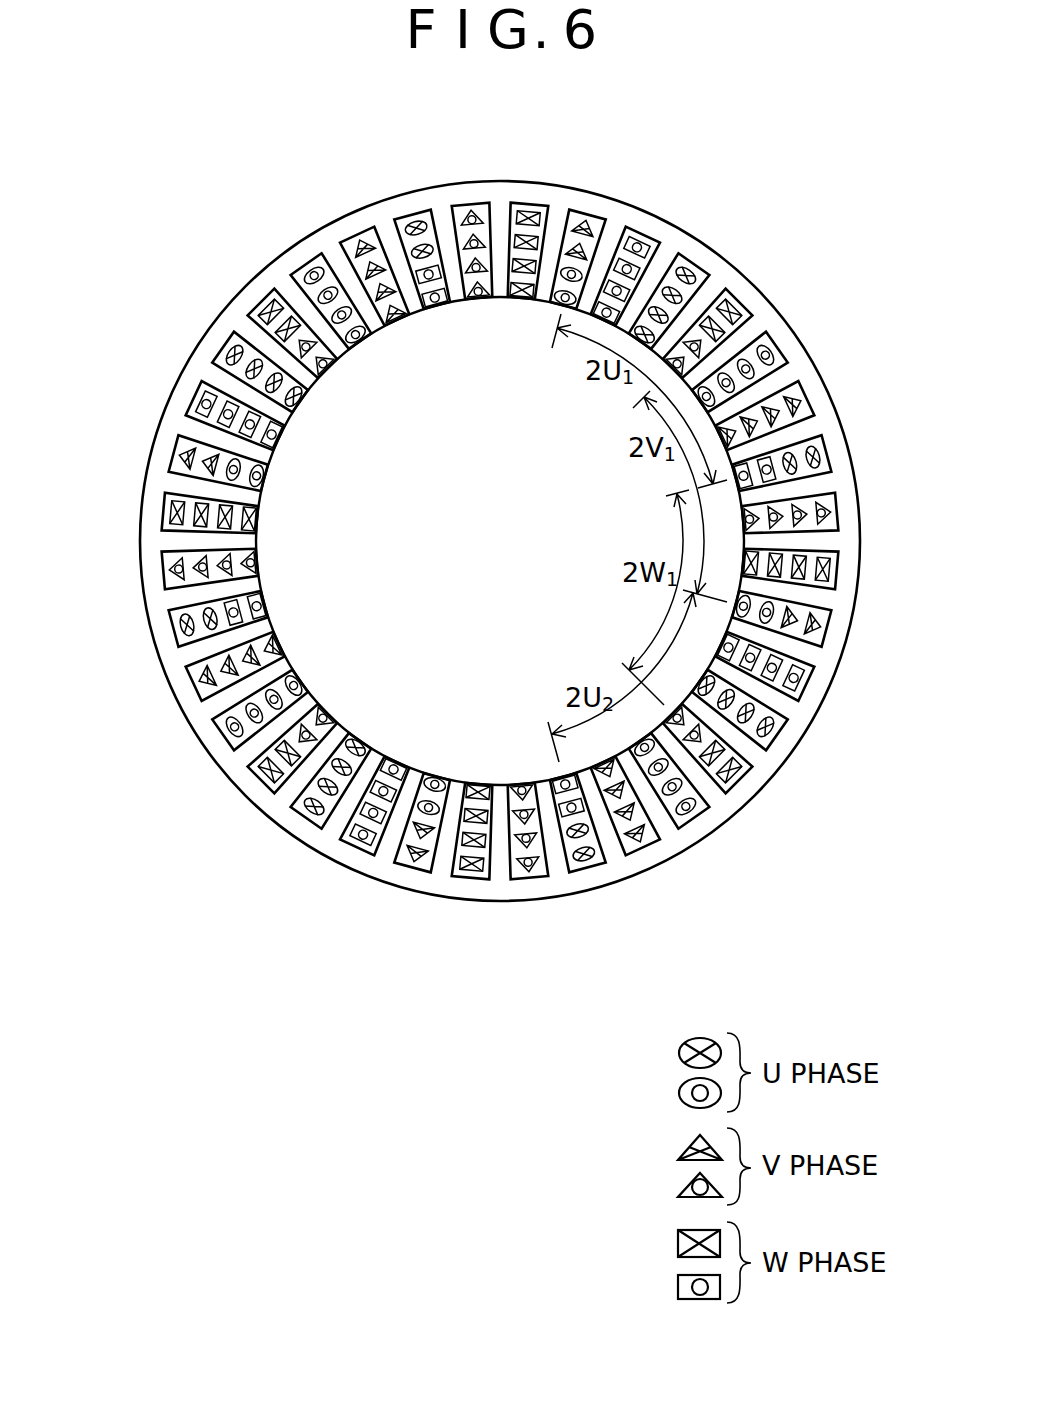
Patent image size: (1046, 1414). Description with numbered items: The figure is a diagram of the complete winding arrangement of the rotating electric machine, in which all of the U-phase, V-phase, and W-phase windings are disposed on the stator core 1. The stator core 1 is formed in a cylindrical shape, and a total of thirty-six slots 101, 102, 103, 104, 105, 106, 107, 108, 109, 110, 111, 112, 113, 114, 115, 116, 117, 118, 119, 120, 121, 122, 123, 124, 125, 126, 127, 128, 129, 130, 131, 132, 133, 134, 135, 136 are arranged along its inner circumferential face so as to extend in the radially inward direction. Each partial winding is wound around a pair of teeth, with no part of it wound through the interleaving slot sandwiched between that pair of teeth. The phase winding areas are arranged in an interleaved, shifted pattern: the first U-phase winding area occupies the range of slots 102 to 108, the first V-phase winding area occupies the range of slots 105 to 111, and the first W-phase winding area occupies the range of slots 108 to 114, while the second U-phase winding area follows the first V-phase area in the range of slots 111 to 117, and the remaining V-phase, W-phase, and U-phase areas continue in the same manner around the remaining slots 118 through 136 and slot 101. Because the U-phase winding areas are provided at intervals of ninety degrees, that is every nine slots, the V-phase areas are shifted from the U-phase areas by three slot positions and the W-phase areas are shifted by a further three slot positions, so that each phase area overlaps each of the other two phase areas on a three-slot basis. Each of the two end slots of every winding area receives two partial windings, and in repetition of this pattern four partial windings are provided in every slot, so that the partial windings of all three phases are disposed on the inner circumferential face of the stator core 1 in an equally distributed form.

The stator core 1 is at (500, 190).
The slot 101 is at (528, 222).
The slot 102 is at (583, 232).
The slot 103 is at (635, 251).
The slot 104 is at (684, 279).
The slot 105 is at (726, 315).
The slot 106 is at (762, 357).
The slot 107 is at (790, 406).
The slot 108 is at (809, 458).
The slot 109 is at (819, 513).
The slot 110 is at (819, 569).
The slot 111 is at (809, 624).
The slot 112 is at (790, 676).
The slot 113 is at (762, 725).
The slot 114 is at (726, 767).
The slot 115 is at (684, 803).
The slot 116 is at (635, 831).
The slot 117 is at (583, 850).
The slot 118 is at (528, 860).
The slot 119 is at (472, 860).
The slot 120 is at (417, 850).
The slot 121 is at (365, 831).
The slot 122 is at (316, 803).
The slot 123 is at (274, 767).
The slot 124 is at (238, 725).
The slot 125 is at (210, 676).
The slot 126 is at (191, 624).
The slot 127 is at (181, 569).
The slot 128 is at (181, 513).
The slot 129 is at (191, 458).
The slot 130 is at (210, 406).
The slot 131 is at (238, 357).
The slot 132 is at (274, 315).
The slot 133 is at (316, 279).
The slot 134 is at (365, 251).
The slot 135 is at (417, 232).
The slot 136 is at (472, 222).